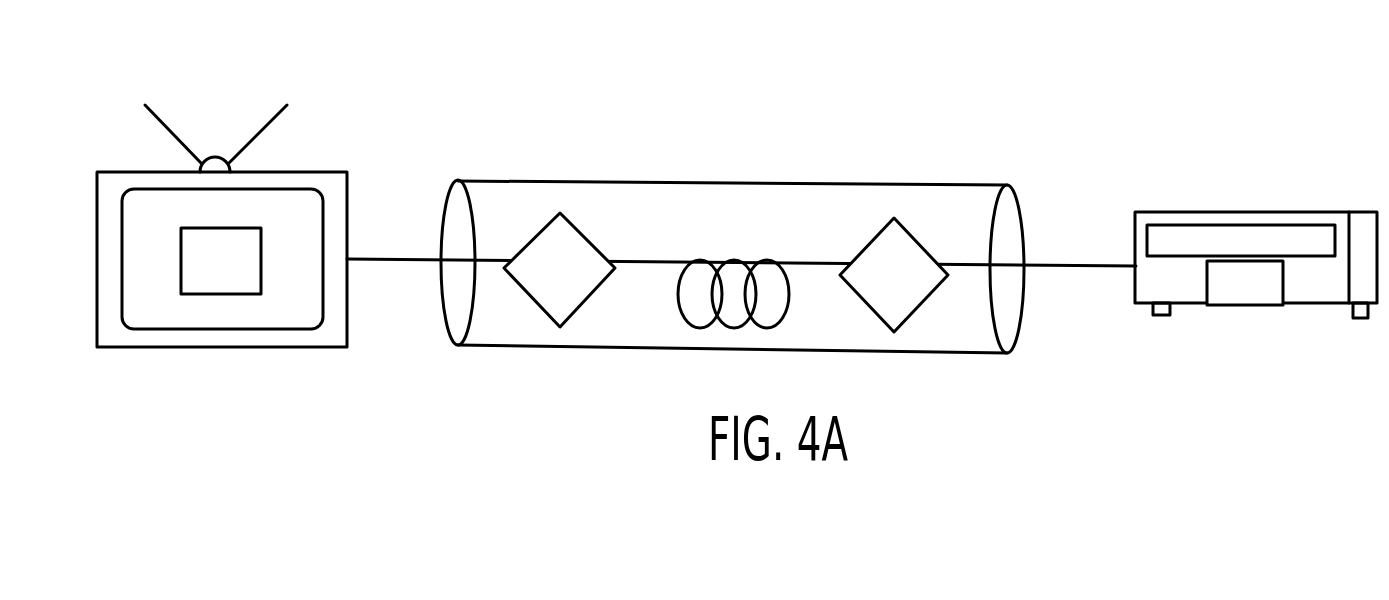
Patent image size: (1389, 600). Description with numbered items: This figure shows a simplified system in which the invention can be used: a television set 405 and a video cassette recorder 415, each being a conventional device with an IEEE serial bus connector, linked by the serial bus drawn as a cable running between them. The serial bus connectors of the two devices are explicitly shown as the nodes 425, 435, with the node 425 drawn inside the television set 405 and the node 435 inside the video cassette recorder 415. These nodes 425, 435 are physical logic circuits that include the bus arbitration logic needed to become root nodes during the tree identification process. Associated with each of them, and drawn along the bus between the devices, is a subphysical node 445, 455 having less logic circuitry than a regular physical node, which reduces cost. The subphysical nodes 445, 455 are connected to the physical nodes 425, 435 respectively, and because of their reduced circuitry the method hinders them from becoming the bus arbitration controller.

The television set 405 is at (316, 319).
The 1394 node 425 is at (197, 276).
The subphysical node 445 is at (585, 285).
The subphysical node 455 is at (920, 292).
The video cassette recorder 415 is at (1313, 212).
The 1394 node 435 is at (1270, 296).